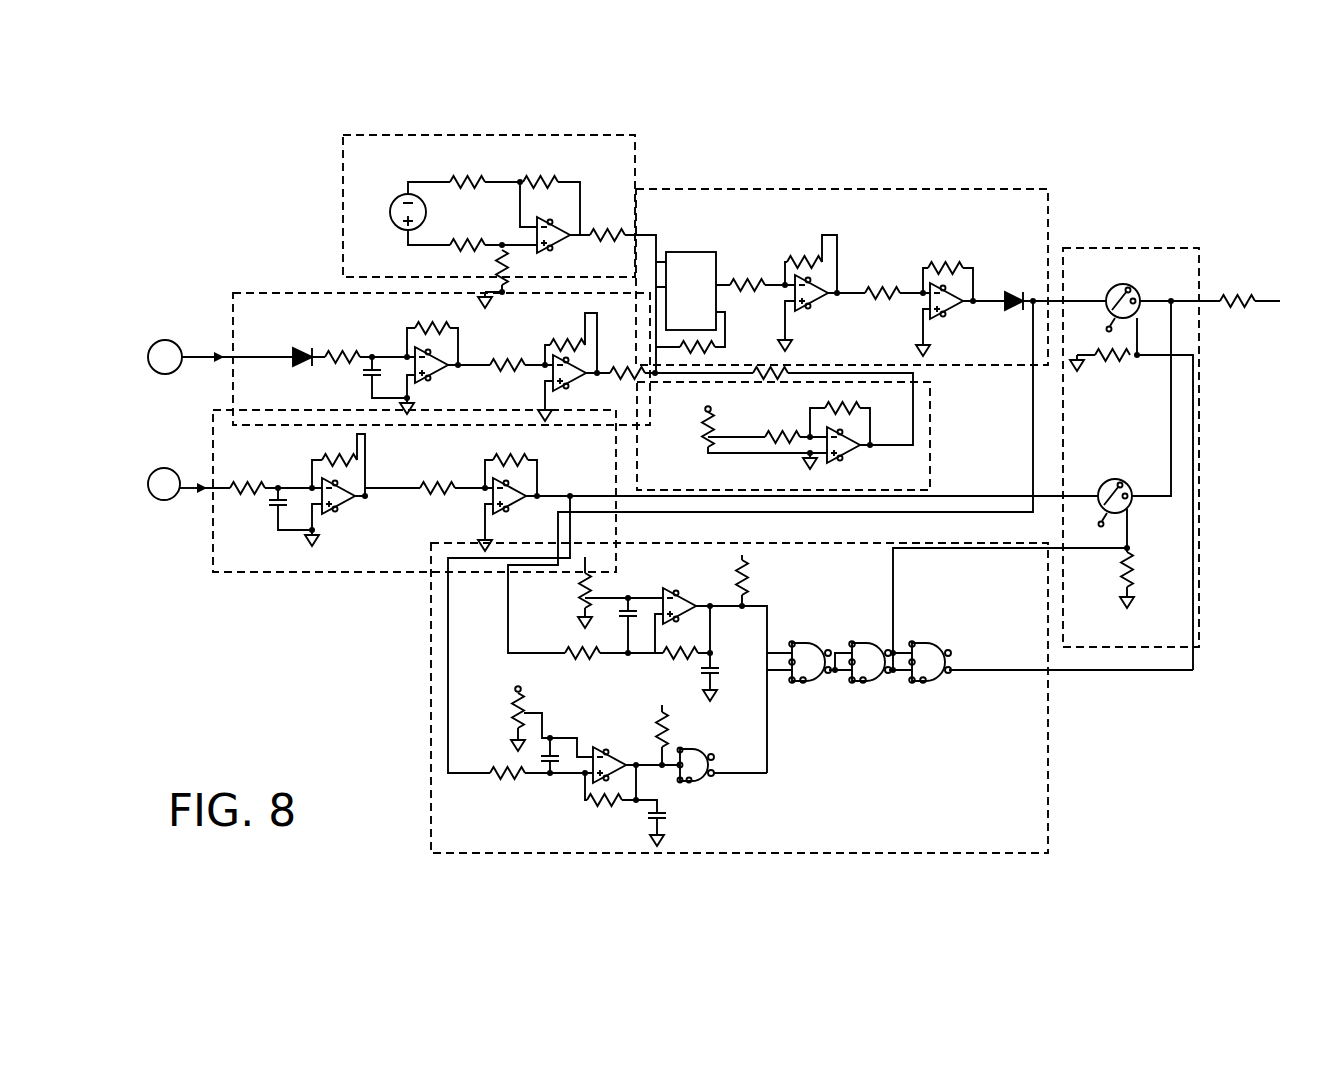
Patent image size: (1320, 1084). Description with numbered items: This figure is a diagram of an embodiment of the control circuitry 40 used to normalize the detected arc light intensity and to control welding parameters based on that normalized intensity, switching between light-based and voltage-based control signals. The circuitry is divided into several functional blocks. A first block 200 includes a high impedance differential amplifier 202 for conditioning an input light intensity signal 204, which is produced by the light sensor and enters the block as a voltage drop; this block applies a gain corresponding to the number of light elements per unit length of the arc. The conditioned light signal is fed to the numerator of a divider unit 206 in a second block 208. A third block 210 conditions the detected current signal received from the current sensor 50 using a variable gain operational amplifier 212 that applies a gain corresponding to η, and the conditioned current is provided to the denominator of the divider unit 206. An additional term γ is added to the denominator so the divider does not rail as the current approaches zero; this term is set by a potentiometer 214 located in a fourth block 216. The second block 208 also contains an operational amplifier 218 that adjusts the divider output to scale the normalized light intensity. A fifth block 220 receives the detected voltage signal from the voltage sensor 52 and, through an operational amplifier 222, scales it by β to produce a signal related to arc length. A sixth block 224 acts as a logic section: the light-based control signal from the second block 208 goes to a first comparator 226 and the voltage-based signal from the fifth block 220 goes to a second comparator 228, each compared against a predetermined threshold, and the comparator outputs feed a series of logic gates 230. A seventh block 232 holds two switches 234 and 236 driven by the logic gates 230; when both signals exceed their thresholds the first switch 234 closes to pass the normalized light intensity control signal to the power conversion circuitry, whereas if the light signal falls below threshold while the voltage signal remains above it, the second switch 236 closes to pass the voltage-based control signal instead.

The control circuitry 40 is at (272, 148).
The current sensor 50 is at (165, 340).
The voltage sensor 52 is at (164, 468).
The first block 200 is at (472, 135).
The high impedance differential amplifier 202 is at (602, 183).
The input light intensity signal 204 is at (390, 207).
The divider unit 206 is at (716, 262).
The second block 208 is at (985, 189).
The third block 210 is at (230, 308).
The variable gain operational amplifier 212 is at (338, 372).
The potentiometer 214 is at (793, 480).
The fourth block 216 is at (875, 498).
The operational amplifier 218 is at (962, 240).
The fifth block 220 is at (282, 575).
The operational amplifier 222 is at (405, 515).
The sixth block 224 is at (430, 668).
The first comparator 226 is at (570, 790).
The second comparator 228 is at (660, 568).
The logic gates 230 is at (892, 698).
The seventh block 232 is at (1200, 465).
The first switch 234 is at (1127, 280).
The second switch 236 is at (1110, 475).